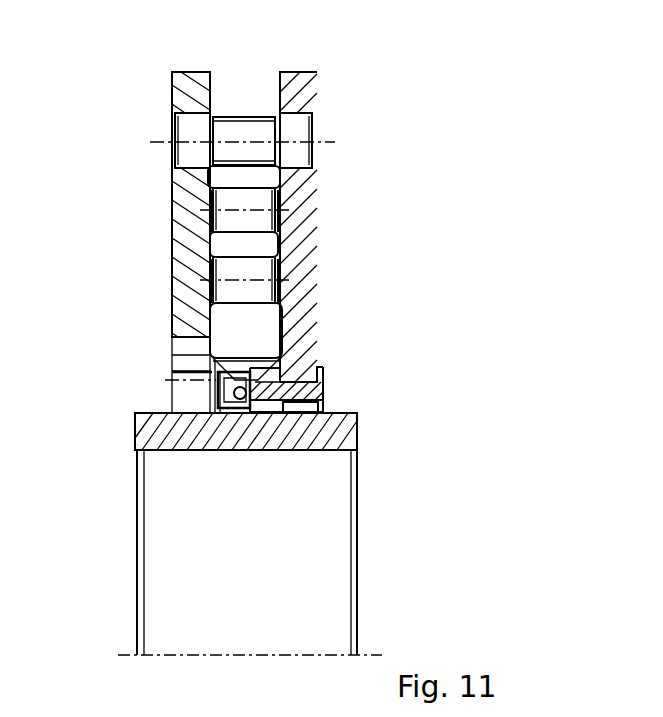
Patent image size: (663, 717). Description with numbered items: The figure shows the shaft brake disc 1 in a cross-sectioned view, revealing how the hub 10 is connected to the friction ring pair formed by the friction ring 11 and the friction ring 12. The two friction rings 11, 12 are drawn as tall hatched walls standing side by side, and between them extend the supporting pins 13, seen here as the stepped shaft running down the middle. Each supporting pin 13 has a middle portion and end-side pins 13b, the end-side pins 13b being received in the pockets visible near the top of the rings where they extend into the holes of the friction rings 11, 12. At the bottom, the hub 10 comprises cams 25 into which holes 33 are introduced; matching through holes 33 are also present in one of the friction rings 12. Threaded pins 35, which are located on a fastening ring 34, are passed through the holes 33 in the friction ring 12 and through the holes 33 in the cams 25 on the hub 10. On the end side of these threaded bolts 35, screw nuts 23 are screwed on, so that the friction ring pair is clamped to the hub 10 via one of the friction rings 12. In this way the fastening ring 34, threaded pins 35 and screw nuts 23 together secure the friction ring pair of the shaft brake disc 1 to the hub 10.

The shaft brake disc 1 is at (96, 168).
The hub 10 is at (133, 467).
The friction ring 11 is at (288, 78).
The friction ring 12 is at (187, 71).
The supporting pins 13 is at (237, 115).
The end-side pins 13b is at (192, 130).
The screw nuts 23 is at (235, 380).
The cams 25 is at (272, 378).
The holes 33 is at (283, 372).
The fastening ring 34 is at (322, 383).
The threaded pins 35 is at (270, 403).